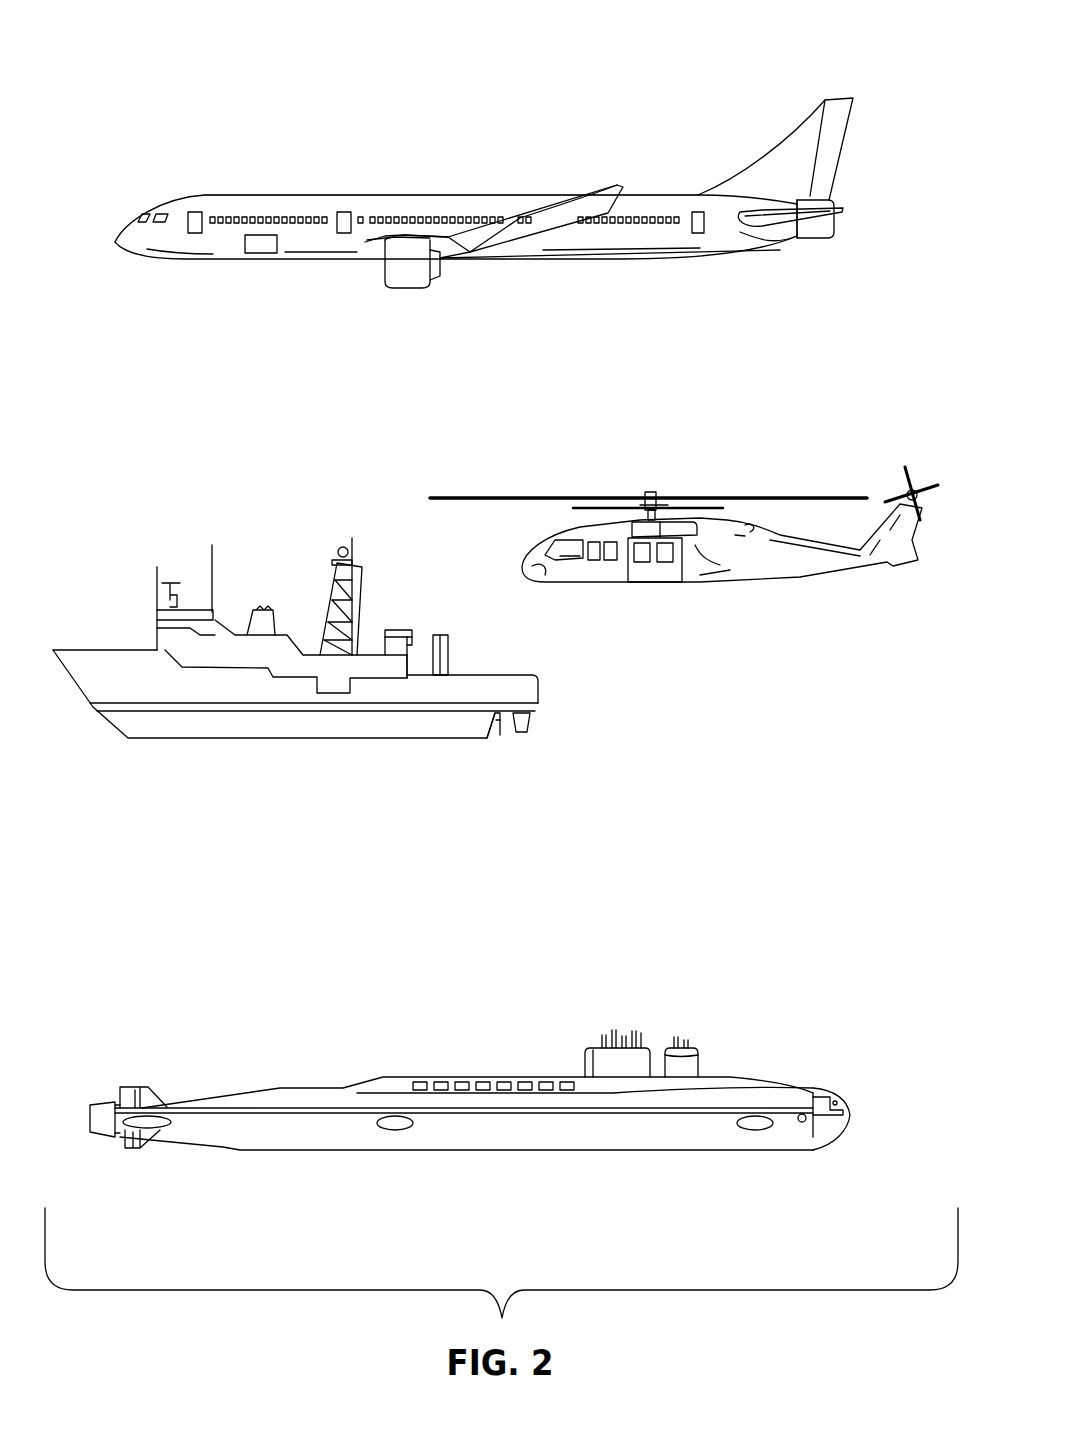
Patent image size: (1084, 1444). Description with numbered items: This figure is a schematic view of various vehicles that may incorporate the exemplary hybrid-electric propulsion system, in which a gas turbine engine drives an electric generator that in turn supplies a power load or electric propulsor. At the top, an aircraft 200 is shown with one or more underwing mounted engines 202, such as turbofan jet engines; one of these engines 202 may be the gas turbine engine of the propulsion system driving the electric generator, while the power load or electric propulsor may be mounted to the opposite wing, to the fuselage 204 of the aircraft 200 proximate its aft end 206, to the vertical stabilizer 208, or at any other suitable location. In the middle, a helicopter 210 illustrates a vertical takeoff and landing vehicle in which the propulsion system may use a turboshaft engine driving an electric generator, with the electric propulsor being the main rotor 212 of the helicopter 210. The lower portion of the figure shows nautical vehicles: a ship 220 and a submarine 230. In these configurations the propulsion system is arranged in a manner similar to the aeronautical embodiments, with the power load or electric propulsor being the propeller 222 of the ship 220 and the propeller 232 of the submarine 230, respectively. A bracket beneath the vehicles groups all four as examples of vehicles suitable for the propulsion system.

The aircraft 200 is at (190, 57).
The underwing mounted engine 202 is at (402, 275).
The fuselage 204 is at (510, 203).
The aft end 206 is at (798, 257).
The vertical stabilizer 208 is at (802, 137).
The helicopter 210 is at (629, 462).
The main rotor 212 is at (777, 497).
The ship 220 is at (120, 575).
The propeller 222 is at (499, 741).
The submarine 230 is at (538, 1027).
The propeller 232 is at (96, 1108).